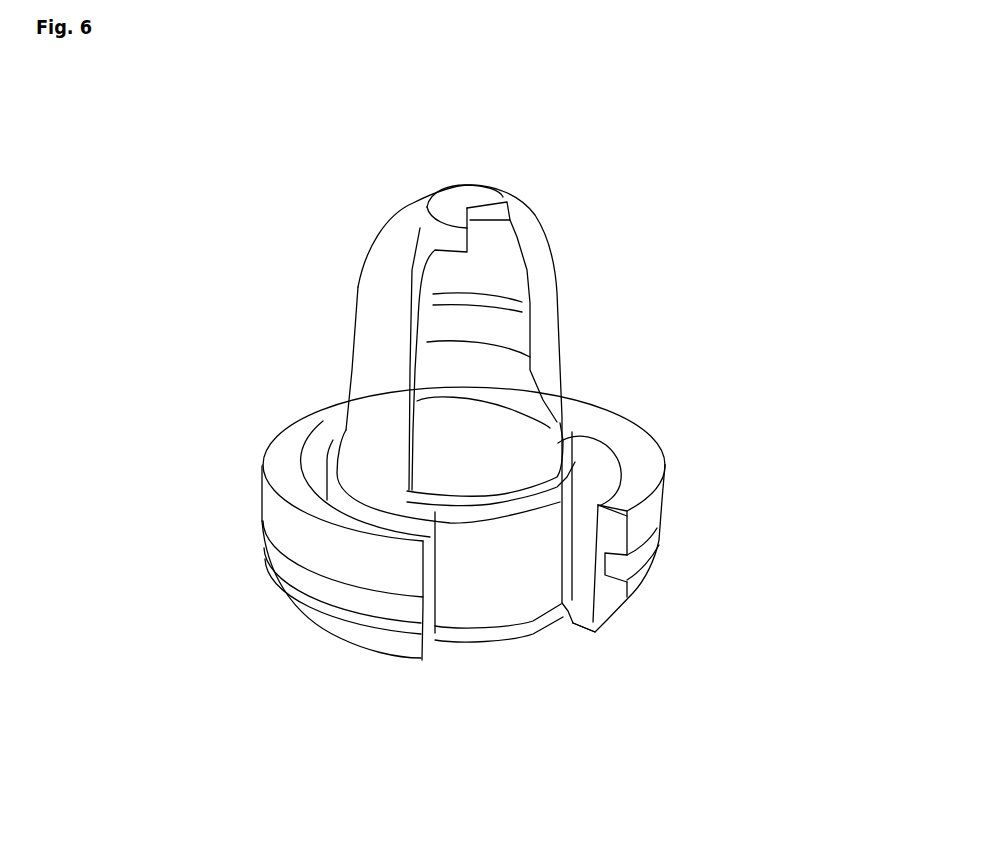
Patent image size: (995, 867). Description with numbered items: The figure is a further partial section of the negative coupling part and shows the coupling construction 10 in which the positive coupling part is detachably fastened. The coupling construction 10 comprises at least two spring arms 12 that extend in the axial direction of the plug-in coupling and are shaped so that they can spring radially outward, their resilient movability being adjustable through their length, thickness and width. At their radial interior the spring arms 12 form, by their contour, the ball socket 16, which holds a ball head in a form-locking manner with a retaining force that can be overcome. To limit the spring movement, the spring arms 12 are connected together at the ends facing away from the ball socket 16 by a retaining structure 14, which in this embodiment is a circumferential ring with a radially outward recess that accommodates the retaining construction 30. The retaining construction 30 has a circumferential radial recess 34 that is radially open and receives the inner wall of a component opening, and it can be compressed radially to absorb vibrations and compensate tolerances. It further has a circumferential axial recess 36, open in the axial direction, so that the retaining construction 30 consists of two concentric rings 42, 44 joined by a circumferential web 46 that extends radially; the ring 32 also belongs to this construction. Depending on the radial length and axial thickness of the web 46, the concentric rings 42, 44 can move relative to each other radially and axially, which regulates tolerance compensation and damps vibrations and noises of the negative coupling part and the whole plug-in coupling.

The coupling construction 10 is at (630, 230).
The spring arm 12 is at (393, 240).
The retaining structure 14 is at (506, 597).
The ball socket 16 is at (510, 237).
The retaining construction 30 is at (677, 425).
The ring 32 is at (288, 463).
The radial recess 34 is at (302, 570).
The axial recess 36 is at (585, 553).
The concentric ring 42 is at (578, 455).
The concentric ring 44 is at (640, 486).
The circumferential web 46 is at (607, 587).